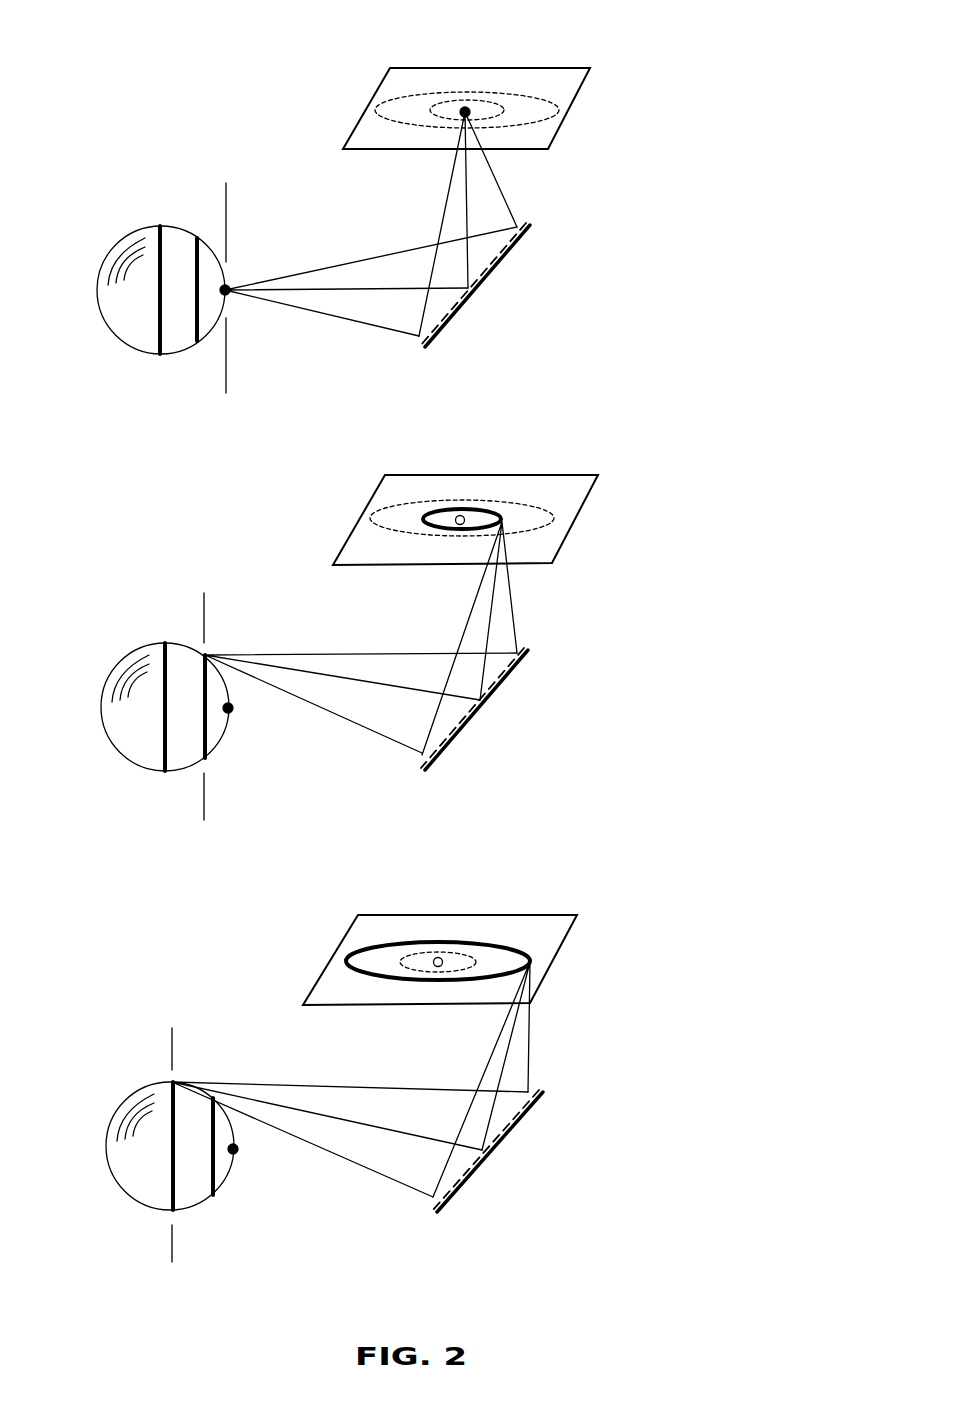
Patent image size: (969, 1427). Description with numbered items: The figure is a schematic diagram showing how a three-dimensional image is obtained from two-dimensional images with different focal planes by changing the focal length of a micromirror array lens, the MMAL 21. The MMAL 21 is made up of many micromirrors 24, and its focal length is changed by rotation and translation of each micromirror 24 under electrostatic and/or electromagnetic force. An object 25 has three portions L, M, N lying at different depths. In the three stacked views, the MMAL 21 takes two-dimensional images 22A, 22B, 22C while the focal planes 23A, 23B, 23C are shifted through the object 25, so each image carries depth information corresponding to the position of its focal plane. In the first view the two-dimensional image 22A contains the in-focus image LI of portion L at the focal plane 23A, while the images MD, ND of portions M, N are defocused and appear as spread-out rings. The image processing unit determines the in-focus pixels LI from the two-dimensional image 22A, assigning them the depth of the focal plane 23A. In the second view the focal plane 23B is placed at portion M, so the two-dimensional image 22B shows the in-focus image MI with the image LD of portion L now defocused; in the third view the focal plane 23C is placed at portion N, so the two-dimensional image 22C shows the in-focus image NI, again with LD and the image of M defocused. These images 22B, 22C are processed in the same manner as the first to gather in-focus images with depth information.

The MMAL 21 is at (465, 323).
The two-dimensional image 22A is at (577, 133).
The two-dimensional image 22B is at (580, 542).
The two-dimensional image 22C is at (570, 963).
The focal plane 23A is at (226, 271).
The focal plane 23B is at (211, 687).
The focal plane 23C is at (177, 1128).
The micromirror 24 is at (417, 342).
The object 25 is at (137, 220).
The portion of object L is at (236, 277).
The portion of object M is at (197, 340).
The portion of object N is at (160, 357).
The in-focus image LI is at (460, 110).
The defocused image MD is at (475, 100).
The defocused image ND is at (535, 92).
The in-focus image MI is at (423, 520).
The defocused image LD is at (468, 515).
The in-focus image NI is at (352, 948).